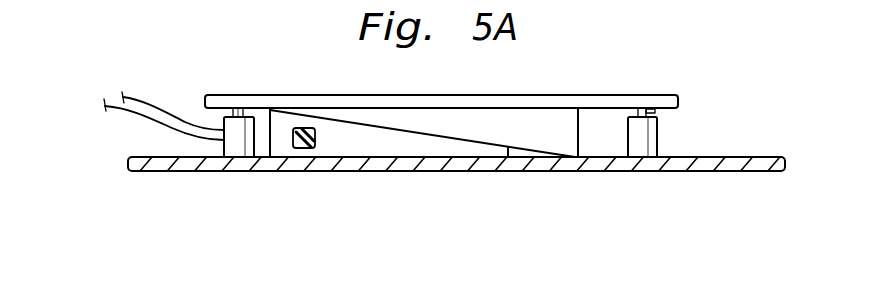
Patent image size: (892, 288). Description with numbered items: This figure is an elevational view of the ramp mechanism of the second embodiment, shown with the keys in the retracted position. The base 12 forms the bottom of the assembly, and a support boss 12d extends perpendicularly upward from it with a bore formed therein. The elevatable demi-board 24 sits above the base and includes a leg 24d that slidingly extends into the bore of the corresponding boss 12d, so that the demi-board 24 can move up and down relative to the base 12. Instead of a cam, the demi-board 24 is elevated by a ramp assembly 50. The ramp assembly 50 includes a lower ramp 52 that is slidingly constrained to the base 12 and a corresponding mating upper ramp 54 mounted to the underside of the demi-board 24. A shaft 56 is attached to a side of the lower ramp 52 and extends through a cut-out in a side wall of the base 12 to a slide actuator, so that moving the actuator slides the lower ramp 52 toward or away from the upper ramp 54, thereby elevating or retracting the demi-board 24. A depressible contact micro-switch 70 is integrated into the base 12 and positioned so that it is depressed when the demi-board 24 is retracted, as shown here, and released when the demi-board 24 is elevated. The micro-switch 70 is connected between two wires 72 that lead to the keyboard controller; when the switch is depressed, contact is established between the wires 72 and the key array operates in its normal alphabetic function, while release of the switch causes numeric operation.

The base 12 is at (167, 156).
The support boss 12d is at (632, 135).
The elevatable demi-board 24 is at (308, 97).
The leg 24d is at (652, 112).
The ramp assembly 50 is at (571, 90).
The lower ramp 52 is at (363, 137).
The upper ramp 54 is at (520, 117).
The shaft 56 is at (305, 138).
The contact micro-switch 70 is at (228, 122).
The wires 72 is at (141, 110).